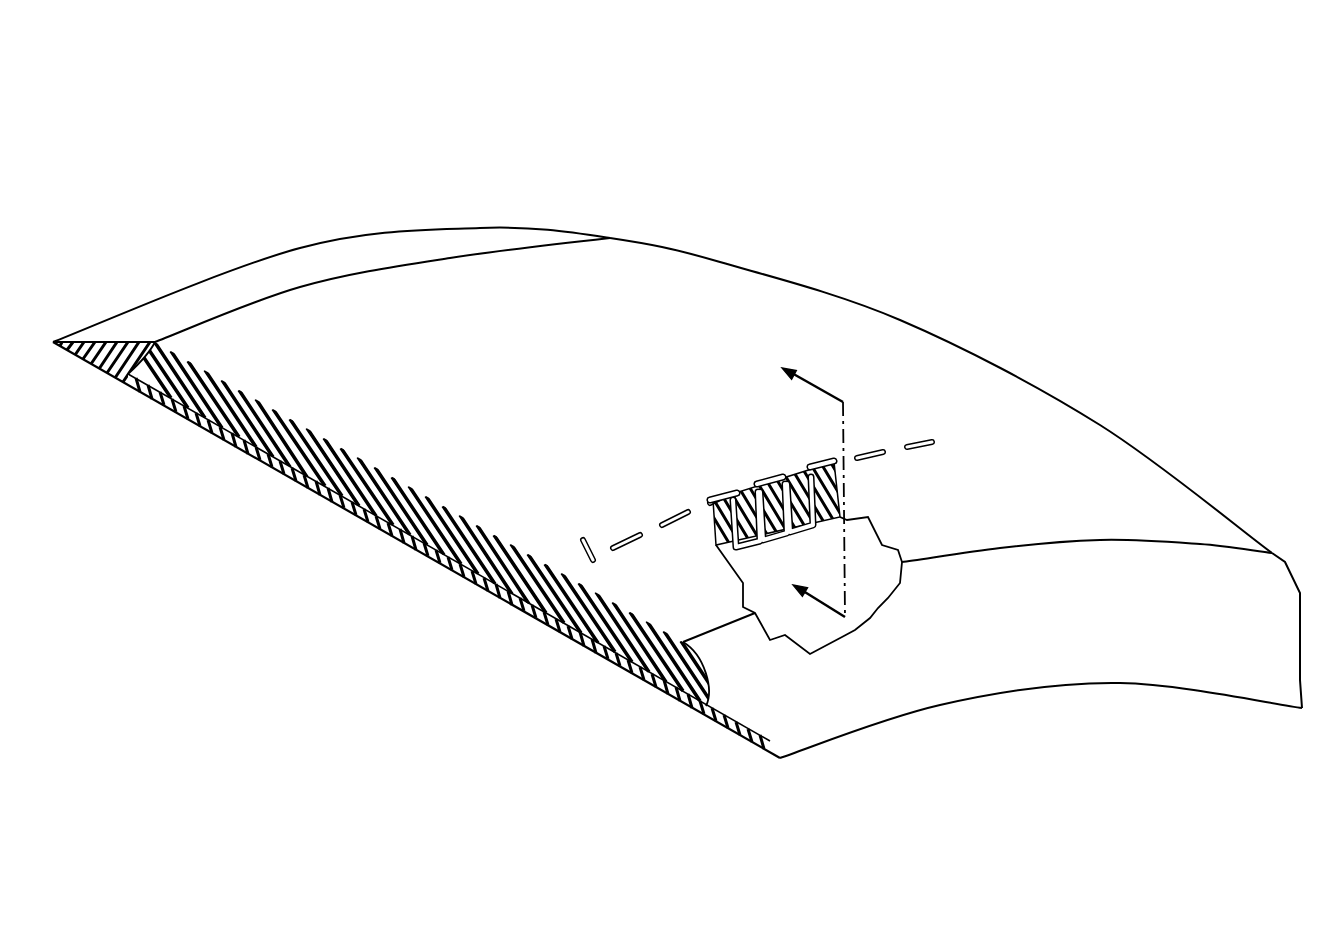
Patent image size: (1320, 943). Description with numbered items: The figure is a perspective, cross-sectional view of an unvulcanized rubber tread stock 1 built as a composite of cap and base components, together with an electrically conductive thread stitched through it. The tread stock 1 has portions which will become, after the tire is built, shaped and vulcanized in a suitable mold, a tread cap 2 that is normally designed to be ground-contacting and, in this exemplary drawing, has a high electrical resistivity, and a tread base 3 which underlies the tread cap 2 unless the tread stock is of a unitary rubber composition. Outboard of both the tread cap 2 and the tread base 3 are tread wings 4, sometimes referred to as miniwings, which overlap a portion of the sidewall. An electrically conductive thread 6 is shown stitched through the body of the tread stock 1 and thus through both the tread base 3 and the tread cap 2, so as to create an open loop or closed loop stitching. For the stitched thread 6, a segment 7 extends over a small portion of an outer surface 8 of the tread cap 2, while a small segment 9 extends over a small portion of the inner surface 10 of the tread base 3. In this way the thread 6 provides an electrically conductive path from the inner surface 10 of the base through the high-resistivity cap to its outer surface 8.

The tread stock 1 is at (211, 152).
The tread cap 2 is at (507, 290).
The tread base 3 is at (358, 513).
The tread wings 4 is at (195, 292).
The electrically conductive thread 6 is at (583, 540).
The segment 7 is at (775, 477).
The outer surface 8 is at (745, 510).
The small segment 9 is at (750, 545).
The inner surface 10 is at (770, 525).